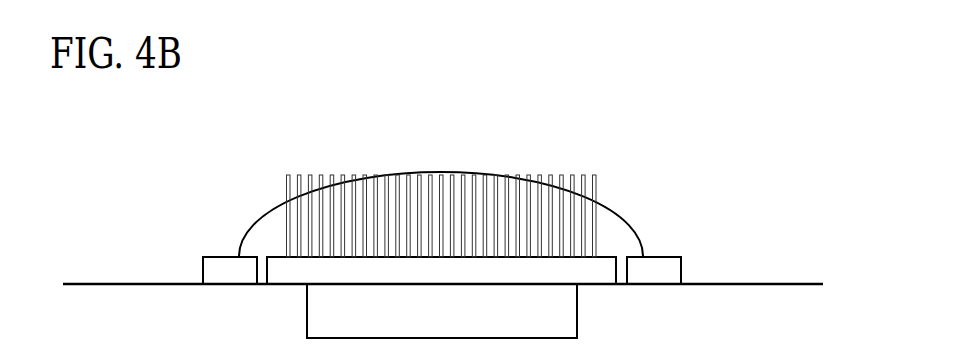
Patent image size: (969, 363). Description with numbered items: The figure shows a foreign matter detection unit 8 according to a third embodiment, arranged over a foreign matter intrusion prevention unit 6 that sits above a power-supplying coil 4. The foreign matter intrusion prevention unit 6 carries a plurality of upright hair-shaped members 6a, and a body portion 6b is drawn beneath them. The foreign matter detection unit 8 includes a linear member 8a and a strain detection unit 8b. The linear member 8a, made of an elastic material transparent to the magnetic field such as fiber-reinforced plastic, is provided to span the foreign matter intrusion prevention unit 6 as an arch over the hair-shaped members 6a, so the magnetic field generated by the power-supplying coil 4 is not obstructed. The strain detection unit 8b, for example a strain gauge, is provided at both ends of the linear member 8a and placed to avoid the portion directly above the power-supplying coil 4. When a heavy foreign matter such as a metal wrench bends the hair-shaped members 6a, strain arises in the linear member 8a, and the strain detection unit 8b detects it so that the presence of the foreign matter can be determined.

The power-supplying coil 4 is at (579, 310).
The foreign matter intrusion prevention unit 6 is at (476, 190).
The hair-shaped members 6a is at (632, 160).
The element body 6b is at (603, 252).
The foreign matter detection unit 8 is at (430, 213).
The linear member 8a is at (268, 213).
The strain detection unit 8b is at (200, 268).